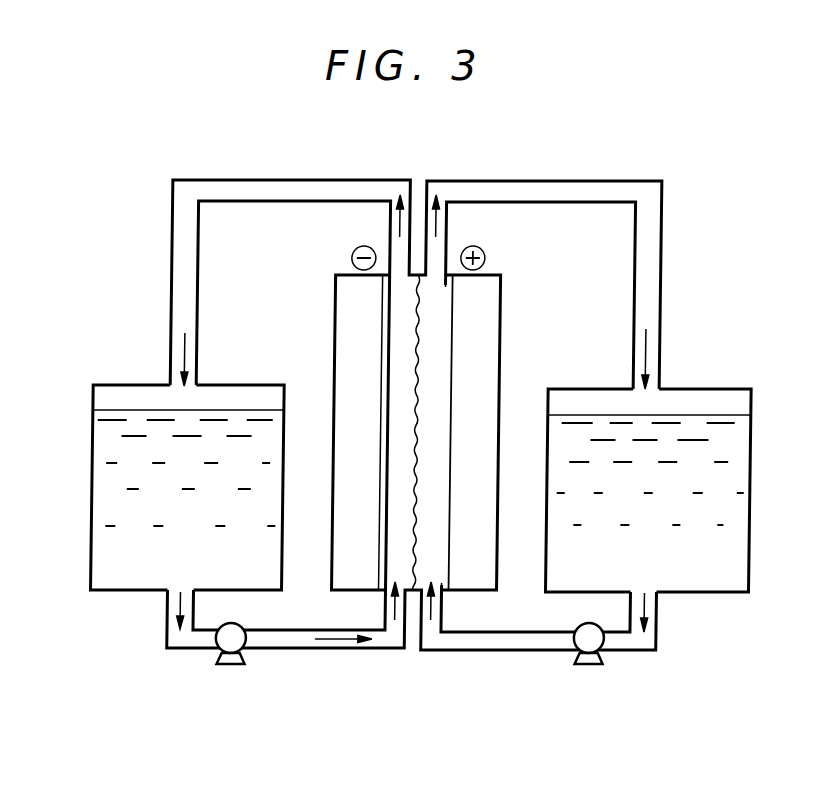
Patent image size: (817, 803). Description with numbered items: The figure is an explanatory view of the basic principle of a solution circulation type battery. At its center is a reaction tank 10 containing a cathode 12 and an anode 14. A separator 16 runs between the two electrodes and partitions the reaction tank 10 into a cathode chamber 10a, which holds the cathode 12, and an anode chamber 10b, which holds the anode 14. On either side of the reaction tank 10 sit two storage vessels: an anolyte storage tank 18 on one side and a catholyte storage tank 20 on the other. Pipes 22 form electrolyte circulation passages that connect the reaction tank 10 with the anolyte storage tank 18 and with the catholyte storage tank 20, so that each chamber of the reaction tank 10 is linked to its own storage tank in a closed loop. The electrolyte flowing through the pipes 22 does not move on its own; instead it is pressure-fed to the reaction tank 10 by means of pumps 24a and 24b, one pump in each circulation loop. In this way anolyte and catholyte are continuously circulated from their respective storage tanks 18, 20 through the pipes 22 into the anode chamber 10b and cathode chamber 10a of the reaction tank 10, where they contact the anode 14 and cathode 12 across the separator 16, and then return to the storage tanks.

The reaction tank 10 is at (414, 432).
The cathode chamber 10a is at (440, 513).
The anode chamber 10b is at (393, 507).
The cathode 12 is at (485, 308).
The anode 14 is at (350, 350).
The separator 16 is at (420, 378).
The anolyte storage tank 18 is at (751, 435).
The catholyte storage tank 20 is at (92, 417).
The pipes 22 is at (442, 190).
The pump 24a is at (594, 665).
The pump 24b is at (235, 665).